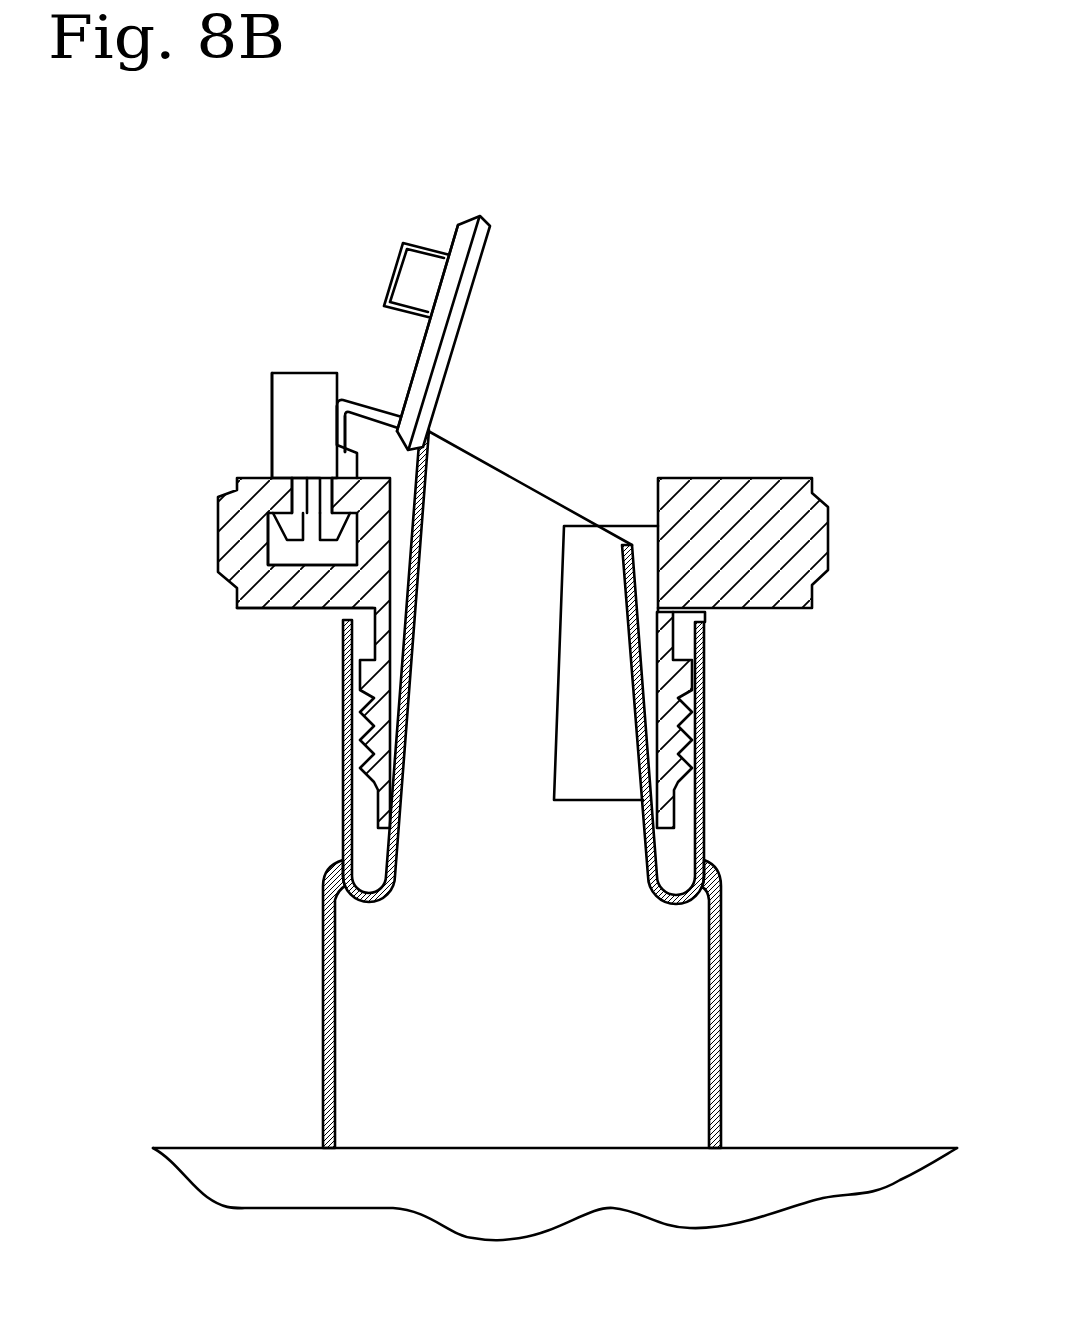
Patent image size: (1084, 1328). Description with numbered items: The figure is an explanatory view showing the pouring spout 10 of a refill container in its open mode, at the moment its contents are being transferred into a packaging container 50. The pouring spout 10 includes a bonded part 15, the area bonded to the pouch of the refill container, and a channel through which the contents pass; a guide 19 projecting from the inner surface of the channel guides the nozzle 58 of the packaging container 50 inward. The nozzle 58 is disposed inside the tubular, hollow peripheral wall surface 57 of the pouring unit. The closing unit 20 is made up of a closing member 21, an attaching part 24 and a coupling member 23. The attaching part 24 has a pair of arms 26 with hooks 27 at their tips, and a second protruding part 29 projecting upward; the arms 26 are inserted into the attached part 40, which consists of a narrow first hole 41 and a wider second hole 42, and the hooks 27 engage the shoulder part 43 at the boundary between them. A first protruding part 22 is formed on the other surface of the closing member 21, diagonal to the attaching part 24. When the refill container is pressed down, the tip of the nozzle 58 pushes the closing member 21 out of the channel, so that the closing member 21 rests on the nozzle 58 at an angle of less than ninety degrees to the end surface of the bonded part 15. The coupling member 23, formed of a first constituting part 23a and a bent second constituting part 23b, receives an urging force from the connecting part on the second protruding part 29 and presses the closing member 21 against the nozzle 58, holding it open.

The pouring spout 10 is at (752, 322).
The bonded part 15 is at (829, 546).
The guide 19 is at (626, 526).
The closing unit 20 is at (446, 238).
The closing member 21 is at (492, 272).
The first protruding part 22 is at (402, 256).
The coupling member 23 is at (372, 400).
The first constituting part 23a is at (343, 422).
The second constituting part 23b is at (392, 414).
The attaching part 24 is at (271, 398).
The arms 26 is at (326, 500).
The hooks 27 is at (331, 548).
The second protruding part 29 is at (276, 378).
The attached part 40 is at (262, 567).
The first hole 41 is at (290, 500).
The second hole 42 is at (297, 566).
The shoulder part 43 is at (298, 470).
The packaging container 50 is at (292, 1016).
The peripheral wall surface 57 is at (702, 800).
The nozzle 58 is at (656, 848).